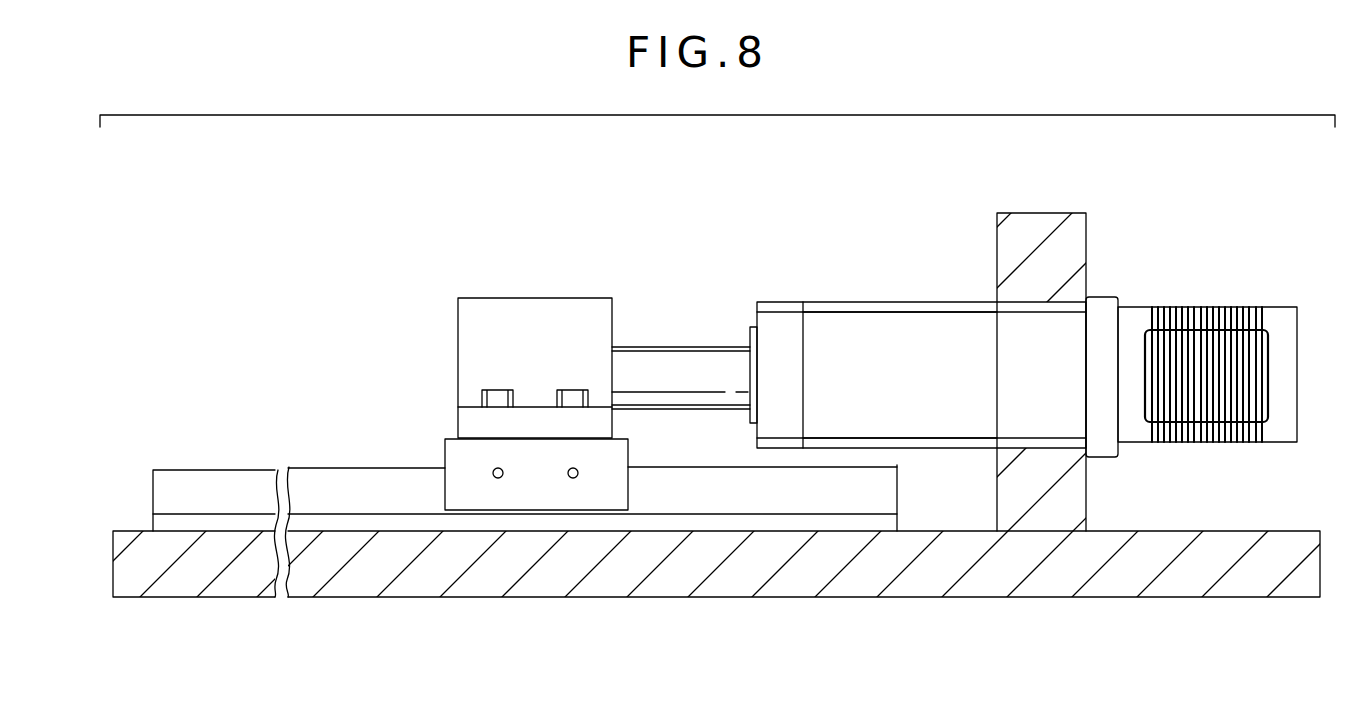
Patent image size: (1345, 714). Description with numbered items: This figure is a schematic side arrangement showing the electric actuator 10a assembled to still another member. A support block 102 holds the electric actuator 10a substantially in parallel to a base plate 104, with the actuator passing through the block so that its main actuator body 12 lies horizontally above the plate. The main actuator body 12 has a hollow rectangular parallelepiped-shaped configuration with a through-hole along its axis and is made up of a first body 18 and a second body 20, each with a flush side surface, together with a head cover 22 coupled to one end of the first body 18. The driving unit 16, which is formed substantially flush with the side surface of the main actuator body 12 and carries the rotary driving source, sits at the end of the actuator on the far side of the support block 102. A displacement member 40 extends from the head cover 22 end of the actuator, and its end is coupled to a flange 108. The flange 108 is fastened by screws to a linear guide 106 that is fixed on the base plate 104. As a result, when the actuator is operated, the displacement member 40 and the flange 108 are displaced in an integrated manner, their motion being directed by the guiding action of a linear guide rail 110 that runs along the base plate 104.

The electric actuator 10a is at (1245, 270).
The main actuator body 12 is at (924, 296).
The driving unit 16 is at (1174, 302).
The first body 18 is at (865, 322).
The second body 20 is at (1106, 445).
The head cover 22 is at (778, 327).
The displacement member 40 is at (680, 367).
The support block 102 is at (1075, 238).
The base plate 104 is at (870, 580).
The linear guide 106 is at (458, 448).
The flange 108 is at (503, 317).
The linear guide rail 110 is at (323, 493).